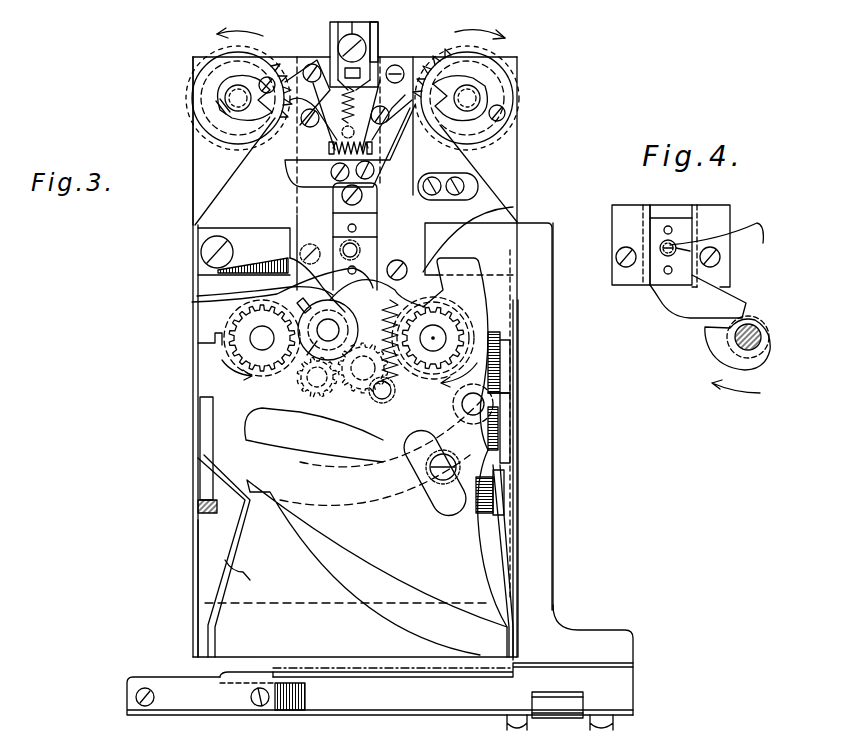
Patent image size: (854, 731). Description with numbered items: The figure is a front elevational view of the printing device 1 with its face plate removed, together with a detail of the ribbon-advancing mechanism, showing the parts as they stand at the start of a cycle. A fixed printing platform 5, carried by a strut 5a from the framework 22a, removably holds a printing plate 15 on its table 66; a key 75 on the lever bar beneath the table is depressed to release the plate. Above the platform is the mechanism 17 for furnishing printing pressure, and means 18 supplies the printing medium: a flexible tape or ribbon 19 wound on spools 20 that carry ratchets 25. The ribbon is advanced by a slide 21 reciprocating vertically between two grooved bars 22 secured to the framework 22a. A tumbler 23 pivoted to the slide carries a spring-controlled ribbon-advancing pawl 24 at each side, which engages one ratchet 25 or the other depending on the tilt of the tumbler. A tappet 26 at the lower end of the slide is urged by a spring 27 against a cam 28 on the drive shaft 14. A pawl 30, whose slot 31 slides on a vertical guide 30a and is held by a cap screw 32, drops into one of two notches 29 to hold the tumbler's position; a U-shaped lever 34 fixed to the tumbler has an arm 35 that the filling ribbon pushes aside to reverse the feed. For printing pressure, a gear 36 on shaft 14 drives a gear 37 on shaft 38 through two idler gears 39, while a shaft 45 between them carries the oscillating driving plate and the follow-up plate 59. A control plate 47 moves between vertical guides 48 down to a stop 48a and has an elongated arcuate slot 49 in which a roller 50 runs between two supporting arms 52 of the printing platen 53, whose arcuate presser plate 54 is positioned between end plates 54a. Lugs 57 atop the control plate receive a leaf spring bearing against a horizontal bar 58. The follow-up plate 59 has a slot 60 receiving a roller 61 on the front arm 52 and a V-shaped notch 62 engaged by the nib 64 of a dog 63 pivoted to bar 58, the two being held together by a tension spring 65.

In FIG. 3, the printing device 1 is at (553, 413).
In FIG. 3, the printing platform 5 is at (185, 699).
In FIG. 3, the strut 5a is at (583, 637).
In FIG. 3, the drive shaft 14 is at (446, 338).
In FIG. 4, the drive shaft 14 is at (748, 331).
In FIG. 3, the printing plate 15 is at (240, 675).
In FIG. 3, the mechanism for furnishing printing pressure 17 is at (193, 420).
In FIG. 3, the means for supplying a printing medium 18 is at (193, 137).
In FIG. 3, the flexible tape 19 is at (480, 168).
In FIG. 3, the spools 20 is at (208, 92).
In FIG. 3, the slide 21 is at (350, 213).
In FIG. 4, the slide 21 is at (657, 213).
In FIG. 3, the grooved bars 22 is at (304, 204).
In FIG. 4, the grooved bars 22 is at (631, 211).
In FIG. 3, the framework 22a is at (195, 580).
In FIG. 3, the tumbler 23 is at (302, 72).
In FIG. 3, the ribbon-advancing pawl 24 is at (290, 170).
In FIG. 3, the ratchets 25 is at (228, 68).
In FIG. 3, the tappet 26 is at (439, 266).
In FIG. 4, the tappet 26 is at (735, 300).
In FIG. 3, the spring 27 is at (513, 207).
In FIG. 4, the spring 27 is at (791, 234).
In FIG. 4, the cam 28 is at (708, 342).
In FIG. 3, the notches 29 is at (332, 72).
In FIG. 3, the pawl 30 is at (340, 24).
In FIG. 3, the vertical guide 30a is at (356, 22).
In FIG. 3, the slot 31 is at (380, 56).
In FIG. 3, the cap screw 32 is at (378, 30).
In FIG. 3, the U-shaped lever 34 is at (377, 212).
In FIG. 3, the arm 35 is at (290, 130).
In FIG. 3, the gear 36 is at (460, 402).
In FIG. 3, the gear 37 is at (236, 322).
In FIG. 3, the shaft 38 is at (258, 343).
In FIG. 3, the idler gears 39 is at (298, 390).
In FIG. 3, the shaft 45 is at (329, 330).
In FIG. 3, the control plate 47 is at (203, 470).
In FIG. 3, the vertical guides 48 is at (207, 410).
In FIG. 3, the stop 48a is at (200, 507).
In FIG. 3, the elongated arcuate slot 49 is at (245, 425).
In FIG. 3, the roller 50 is at (503, 390).
In FIG. 3, the supporting arms 52 is at (497, 480).
In FIG. 3, the printing platen 53 is at (497, 570).
In FIG. 3, the arcuate presser plate 54 is at (352, 596).
In FIG. 3, the end plates 54a is at (243, 570).
In FIG. 3, the lugs 57 is at (215, 340).
In FIG. 3, the horizontal bar 58 is at (505, 237).
In FIG. 3, the follow-up plate 59 is at (460, 278).
In FIG. 3, the slot 60 is at (432, 512).
In FIG. 3, the roller 61 is at (413, 492).
In FIG. 3, the V-shaped notch 62 is at (192, 301).
In FIG. 3, the dog 63 is at (237, 252).
In FIG. 3, the nib 64 is at (265, 287).
In FIG. 3, the tension spring 65 is at (442, 318).
In FIG. 3, the table 66 is at (319, 696).
In FIG. 3, the key 75 is at (585, 705).